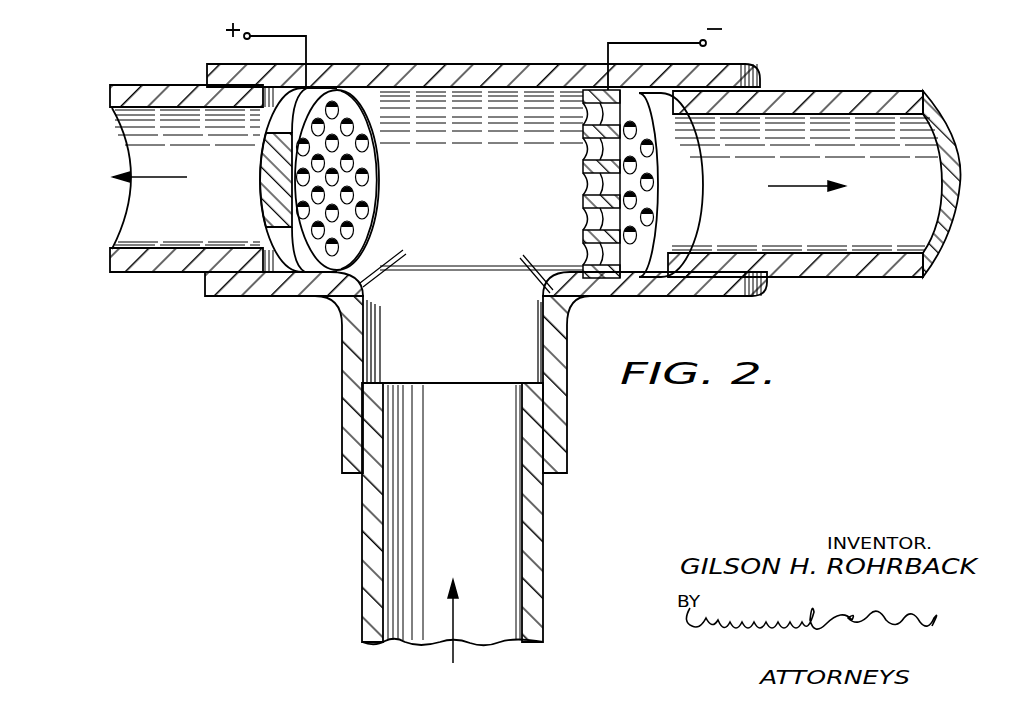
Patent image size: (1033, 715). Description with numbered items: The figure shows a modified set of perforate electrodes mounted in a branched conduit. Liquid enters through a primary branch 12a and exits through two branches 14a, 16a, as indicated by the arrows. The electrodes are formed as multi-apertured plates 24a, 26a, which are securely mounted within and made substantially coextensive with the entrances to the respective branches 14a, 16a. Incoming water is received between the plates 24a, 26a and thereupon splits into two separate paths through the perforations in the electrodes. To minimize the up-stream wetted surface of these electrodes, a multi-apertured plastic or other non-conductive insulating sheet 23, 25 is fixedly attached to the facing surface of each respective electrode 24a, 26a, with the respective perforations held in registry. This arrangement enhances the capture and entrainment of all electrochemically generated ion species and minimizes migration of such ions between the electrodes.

The primary branch 12a is at (537, 555).
The branch 14a is at (143, 272).
The branch 16a is at (793, 278).
The multi-apertured insulating sheet 23 is at (370, 197).
The multi-apertured plate electrode 24a is at (265, 170).
The multi-apertured insulating sheet 25 is at (583, 172).
The multi-apertured plate electrode 26a is at (655, 172).